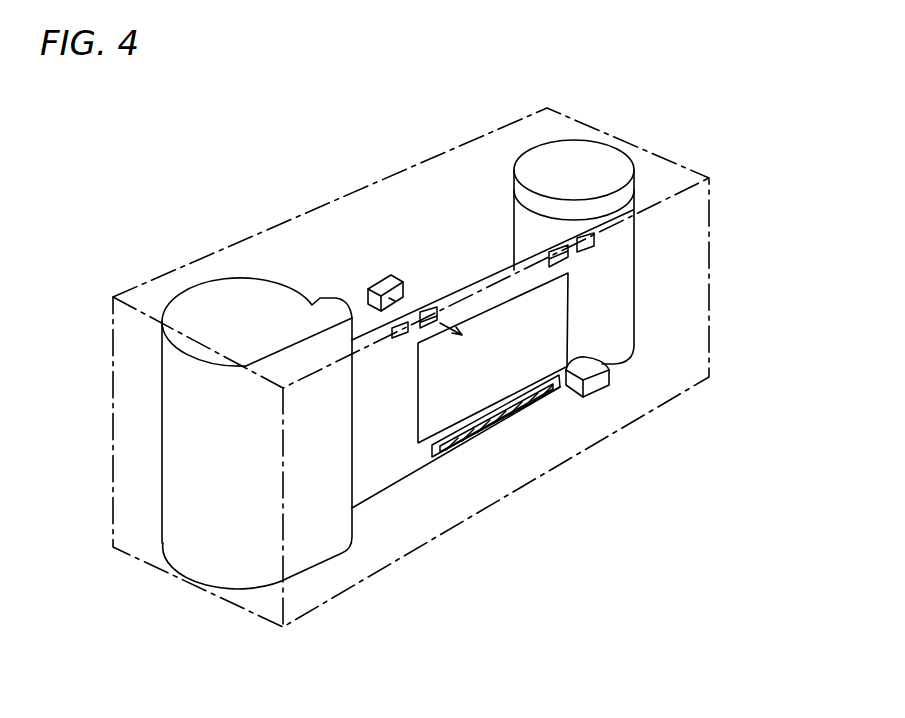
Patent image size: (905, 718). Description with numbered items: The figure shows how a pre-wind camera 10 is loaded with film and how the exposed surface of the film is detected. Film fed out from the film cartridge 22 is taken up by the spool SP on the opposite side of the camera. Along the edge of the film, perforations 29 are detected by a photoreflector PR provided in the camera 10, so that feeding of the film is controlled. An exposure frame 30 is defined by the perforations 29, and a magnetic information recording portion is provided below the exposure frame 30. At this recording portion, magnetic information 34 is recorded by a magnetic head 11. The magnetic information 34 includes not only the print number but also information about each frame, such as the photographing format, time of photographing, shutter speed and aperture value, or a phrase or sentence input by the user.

The pre-wind camera 10 is at (457, 147).
The film cartridge 22 is at (207, 555).
The spool SP is at (597, 157).
The exposure frame 30 is at (552, 315).
The photoreflector PR is at (382, 283).
The perforations 29 is at (428, 307).
The magnetic head 11 is at (597, 392).
The magnetic information 34 is at (510, 418).